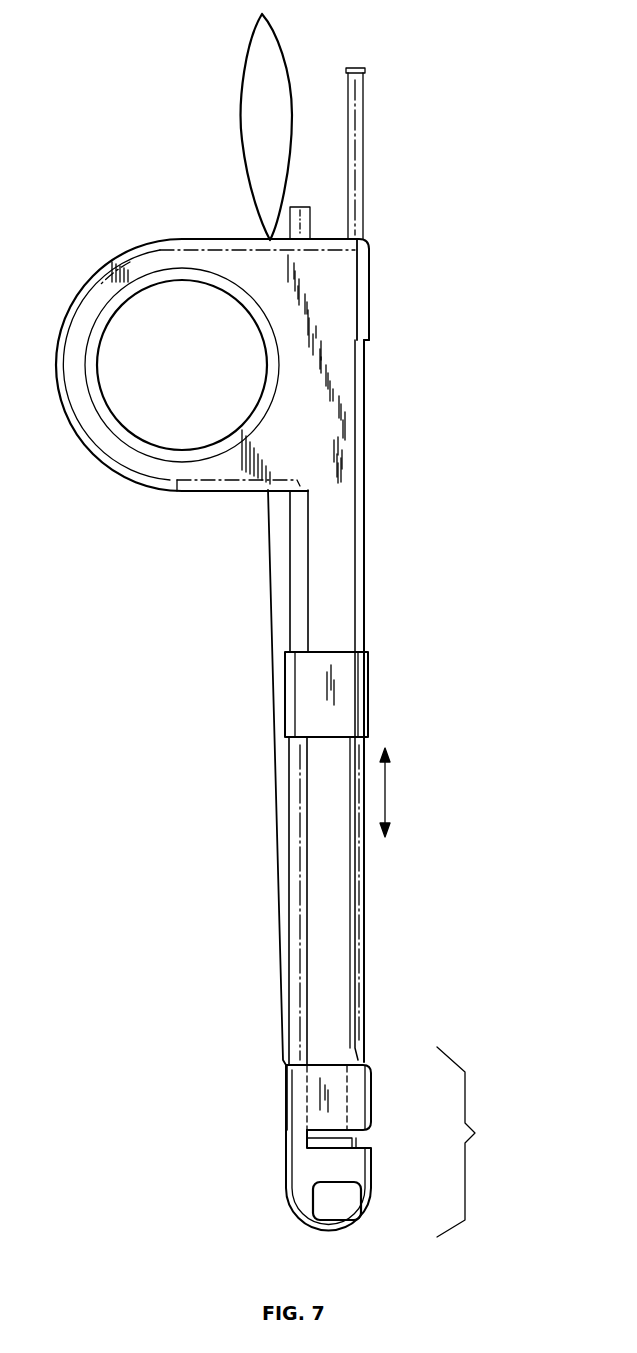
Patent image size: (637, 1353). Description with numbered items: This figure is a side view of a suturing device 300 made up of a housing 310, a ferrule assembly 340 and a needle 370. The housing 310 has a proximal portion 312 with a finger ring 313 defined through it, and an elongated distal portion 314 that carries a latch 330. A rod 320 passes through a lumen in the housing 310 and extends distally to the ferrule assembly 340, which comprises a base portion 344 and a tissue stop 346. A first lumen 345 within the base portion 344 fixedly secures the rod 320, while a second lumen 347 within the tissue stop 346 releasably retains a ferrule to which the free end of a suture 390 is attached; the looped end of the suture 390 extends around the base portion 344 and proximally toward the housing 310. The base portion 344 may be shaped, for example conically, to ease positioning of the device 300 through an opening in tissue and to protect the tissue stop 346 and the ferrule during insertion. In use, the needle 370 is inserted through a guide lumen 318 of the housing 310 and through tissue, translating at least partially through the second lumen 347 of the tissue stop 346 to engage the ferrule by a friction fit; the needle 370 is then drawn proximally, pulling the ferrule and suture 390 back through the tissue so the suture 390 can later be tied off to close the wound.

The suturing device 300 is at (88, 152).
The housing 310 is at (82, 285).
The proximal portion 312 is at (167, 239).
The finger ring 313 is at (160, 424).
The guide lumen 318 is at (378, 266).
The distal portion 314 is at (368, 697).
The latch 330 is at (285, 697).
The suture 390 is at (275, 782).
The rod 320 is at (290, 828).
The needle 370 is at (363, 983).
The ferrule assembly 340 is at (374, 1143).
The first lumen 345 is at (302, 1093).
The tissue stop 346 is at (372, 1073).
The second lumen 347 is at (362, 1099).
The base portion 344 is at (291, 1212).